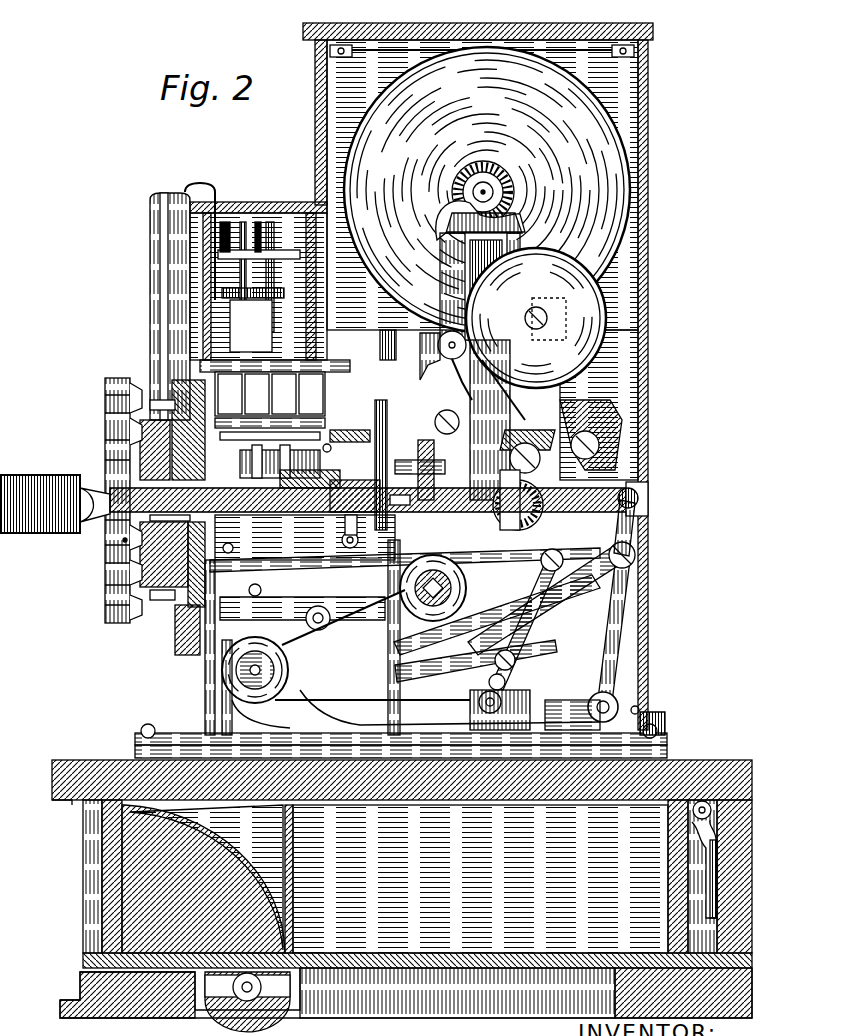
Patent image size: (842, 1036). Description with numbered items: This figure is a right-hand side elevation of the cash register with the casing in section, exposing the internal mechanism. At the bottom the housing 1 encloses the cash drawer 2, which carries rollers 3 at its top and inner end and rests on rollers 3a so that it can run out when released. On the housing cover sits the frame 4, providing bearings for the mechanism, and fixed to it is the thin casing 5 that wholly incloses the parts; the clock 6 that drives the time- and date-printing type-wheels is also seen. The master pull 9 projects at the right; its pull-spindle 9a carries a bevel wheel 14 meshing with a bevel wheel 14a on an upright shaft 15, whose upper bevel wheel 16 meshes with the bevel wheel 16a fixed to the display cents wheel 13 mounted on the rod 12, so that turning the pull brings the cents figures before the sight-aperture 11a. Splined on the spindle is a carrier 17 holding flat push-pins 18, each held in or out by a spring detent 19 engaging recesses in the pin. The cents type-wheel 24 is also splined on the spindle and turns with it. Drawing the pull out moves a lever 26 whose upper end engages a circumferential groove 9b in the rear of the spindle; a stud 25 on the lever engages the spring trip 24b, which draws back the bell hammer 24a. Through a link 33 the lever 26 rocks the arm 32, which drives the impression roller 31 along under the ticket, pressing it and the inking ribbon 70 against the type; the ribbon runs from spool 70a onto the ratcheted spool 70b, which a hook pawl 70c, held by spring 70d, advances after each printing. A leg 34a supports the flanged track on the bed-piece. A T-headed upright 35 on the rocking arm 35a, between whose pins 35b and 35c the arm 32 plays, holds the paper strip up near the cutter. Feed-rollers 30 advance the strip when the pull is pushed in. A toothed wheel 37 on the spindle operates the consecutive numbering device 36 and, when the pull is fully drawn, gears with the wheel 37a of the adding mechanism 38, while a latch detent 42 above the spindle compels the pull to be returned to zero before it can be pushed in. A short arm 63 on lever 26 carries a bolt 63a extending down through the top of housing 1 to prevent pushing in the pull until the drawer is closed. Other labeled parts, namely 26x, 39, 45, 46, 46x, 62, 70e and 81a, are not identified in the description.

The base or housing 1 is at (722, 762).
The cash drawer 2 is at (399, 879).
The rollers 3 is at (690, 806).
The rollers 3a is at (247, 1001).
The frame 4 is at (401, 741).
The casing 5 is at (500, 30).
The clock 6 is at (150, 320).
The master pull 9 is at (55, 491).
The pull-spindle 9a is at (658, 492).
The circumferential groove 9b is at (640, 480).
The sight-aperture 11a is at (312, 200).
The rod 12 is at (495, 192).
The display cents wheel 13 is at (487, 190).
The bevel wheel 14 is at (531, 500).
The bevel wheel 14a is at (515, 450).
The upright shaft 15 is at (499, 420).
The bevel wheel 16 is at (516, 218).
The bevel wheel 16a is at (483, 182).
The carrier 17 is at (150, 545).
The push-pins 18 is at (105, 396).
The spring detent 19 is at (150, 405).
The cents type-wheel 24 is at (536, 318).
The spring hammer 24a is at (440, 348).
The spring trip 24b is at (591, 435).
The pin or stud 25 is at (636, 515).
The lever 26 is at (611, 629).
The pivot 26x is at (636, 553).
The feed-rollers 30 is at (327, 441).
The impression roller 31 is at (295, 474).
The rocking arm 32 is at (527, 619).
The link 33 is at (547, 600).
The leg 34a is at (476, 661).
The T-headed upright 35 is at (335, 617).
The rocking arm 35a is at (469, 629).
The pin 35b is at (483, 661).
The pin 35c is at (513, 702).
The consecutive numbering device 36 is at (309, 537).
The toothed wheel 37 is at (427, 450).
The wheel 37a is at (396, 350).
The adding mechanism 38 is at (300, 365).
The lever 39 is at (302, 605).
The latch detent 42 is at (404, 465).
The pin 45 is at (280, 464).
The bar 46 is at (270, 442).
The pin 46x is at (110, 562).
The collar 62 is at (310, 491).
The short arm 63 is at (620, 698).
The bolt 63a is at (660, 718).
The inking ribbon 70 is at (205, 625).
The spool 70a is at (433, 588).
The ratcheted spool 70b is at (372, 645).
The hook pawl 70c is at (463, 703).
The spring 70d is at (450, 721).
The belt 70e is at (255, 722).
The rod 81a is at (405, 562).